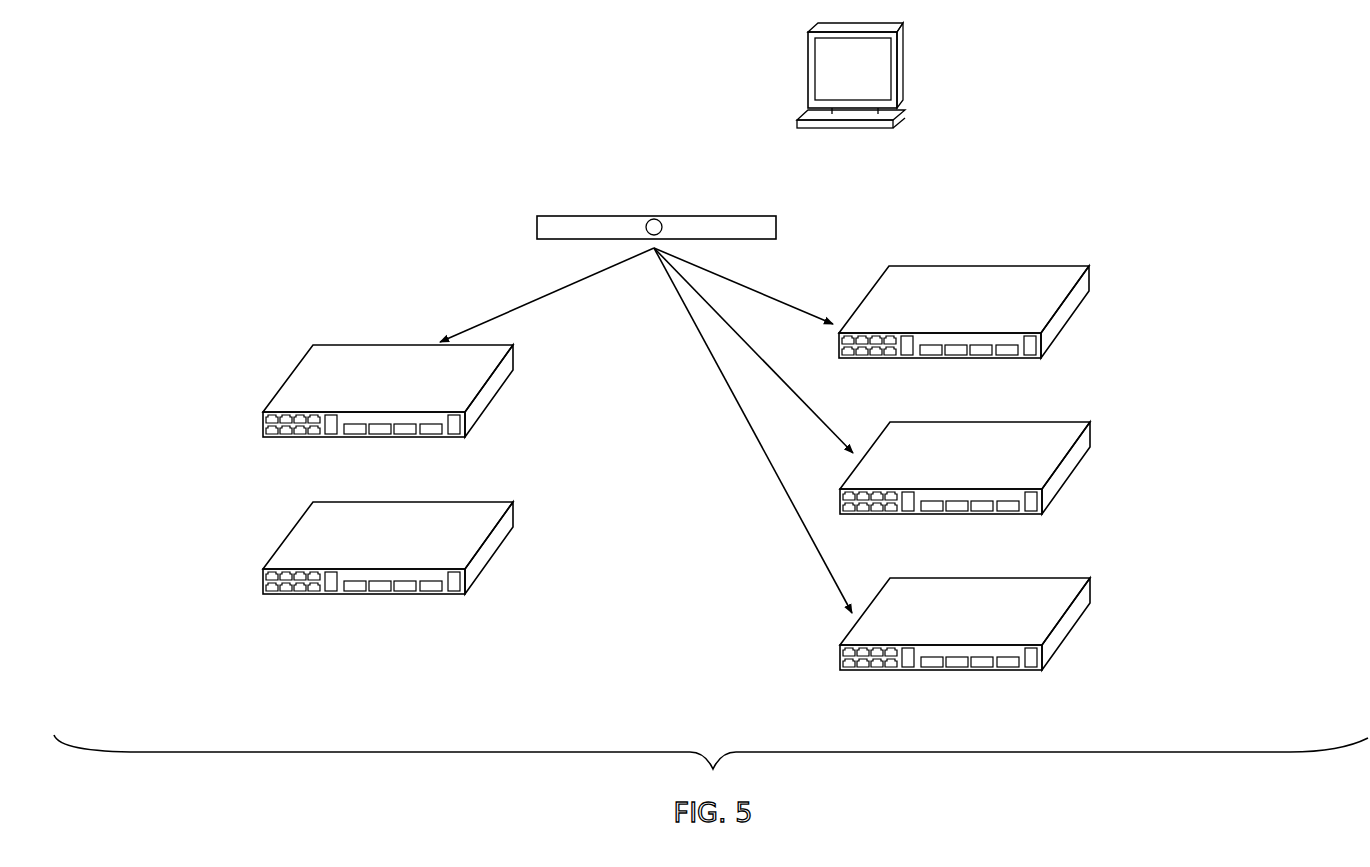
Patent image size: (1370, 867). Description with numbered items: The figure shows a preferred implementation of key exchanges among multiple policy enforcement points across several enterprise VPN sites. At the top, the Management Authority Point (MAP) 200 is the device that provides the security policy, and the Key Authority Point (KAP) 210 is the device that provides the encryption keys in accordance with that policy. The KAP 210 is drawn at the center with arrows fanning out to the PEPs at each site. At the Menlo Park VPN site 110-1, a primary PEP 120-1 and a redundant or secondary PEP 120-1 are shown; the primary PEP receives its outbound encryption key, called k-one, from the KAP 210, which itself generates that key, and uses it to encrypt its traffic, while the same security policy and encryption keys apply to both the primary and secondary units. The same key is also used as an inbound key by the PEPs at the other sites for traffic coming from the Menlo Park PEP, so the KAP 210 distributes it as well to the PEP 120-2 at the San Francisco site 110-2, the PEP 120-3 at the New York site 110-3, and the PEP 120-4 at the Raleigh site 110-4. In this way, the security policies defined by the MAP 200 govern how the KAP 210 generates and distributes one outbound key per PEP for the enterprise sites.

The Management Authority Point (MAP) 200 is at (903, 65).
The Key Authority Point (KAP) 210 is at (707, 216).
The Menlo Park VPN site 110-1 is at (149, 220).
The San Francisco site 110-2 is at (1292, 333).
The New York site 110-3 is at (1292, 513).
The Raleigh site 110-4 is at (1294, 674).
The PEP (primary and secondary/redundant policy enforcement point) 120-1 is at (275, 553).
The PEP at San Francisco site 120-2 is at (1043, 267).
The PEP at New York site 120-3 is at (1044, 422).
The PEP at Raleigh site 120-4 is at (1048, 578).